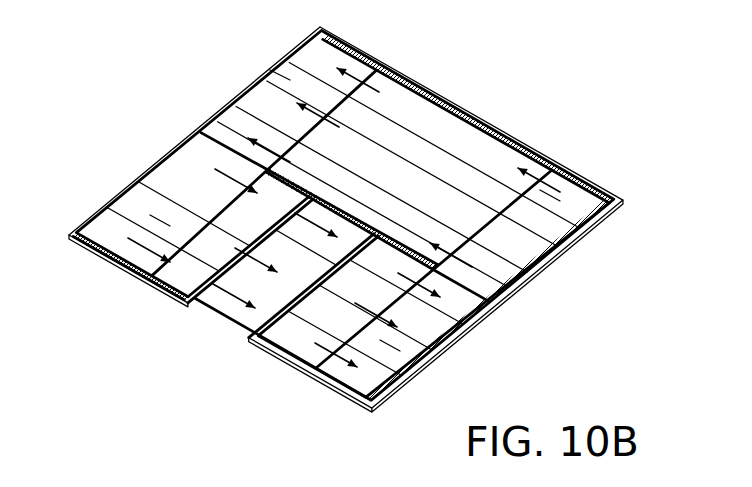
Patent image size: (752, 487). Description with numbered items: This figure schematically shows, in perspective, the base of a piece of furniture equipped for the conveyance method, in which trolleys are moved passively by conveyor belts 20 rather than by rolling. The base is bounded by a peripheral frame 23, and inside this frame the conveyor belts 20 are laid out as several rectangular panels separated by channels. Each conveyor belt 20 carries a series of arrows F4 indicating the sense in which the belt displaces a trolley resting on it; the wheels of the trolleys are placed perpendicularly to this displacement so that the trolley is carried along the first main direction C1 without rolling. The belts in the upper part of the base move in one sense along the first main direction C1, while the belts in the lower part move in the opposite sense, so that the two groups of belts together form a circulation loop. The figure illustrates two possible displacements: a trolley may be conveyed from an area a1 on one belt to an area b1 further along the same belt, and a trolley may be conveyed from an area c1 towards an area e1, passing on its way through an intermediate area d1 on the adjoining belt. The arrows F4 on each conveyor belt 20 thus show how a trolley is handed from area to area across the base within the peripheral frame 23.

The conveyor belt 20 is at (424, 114).
The peripheral frame 23 is at (249, 83).
The first main direction C1 is at (410, 164).
The arrows F4 (conveyor belt displacement direction) F4 is at (178, 148).
The area a1 is at (543, 219).
The area b1 is at (289, 87).
The area c1 is at (162, 203).
The area d1 is at (301, 254).
The area e1 is at (404, 330).